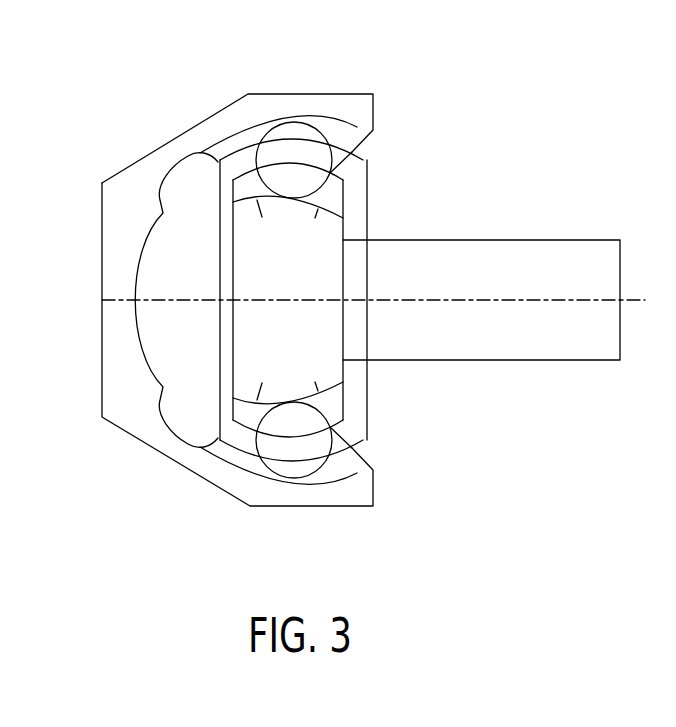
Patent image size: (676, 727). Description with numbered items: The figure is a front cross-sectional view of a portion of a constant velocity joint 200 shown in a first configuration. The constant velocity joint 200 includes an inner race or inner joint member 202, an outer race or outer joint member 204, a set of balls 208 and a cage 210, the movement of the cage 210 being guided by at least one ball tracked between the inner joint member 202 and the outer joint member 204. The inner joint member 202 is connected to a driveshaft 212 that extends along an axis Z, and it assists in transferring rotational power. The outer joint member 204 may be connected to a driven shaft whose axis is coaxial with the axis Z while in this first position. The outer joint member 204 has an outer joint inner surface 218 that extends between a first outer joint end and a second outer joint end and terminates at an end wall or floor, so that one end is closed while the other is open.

The constant velocity joint 200 is at (143, 88).
The inner joint member 202 is at (327, 372).
The outer joint member 204 is at (345, 94).
The set of balls 208 is at (290, 465).
The cage 210 is at (358, 170).
The driveshaft 212 is at (580, 343).
The outer joint inner surface 218 is at (357, 129).
The axis Z is at (630, 298).